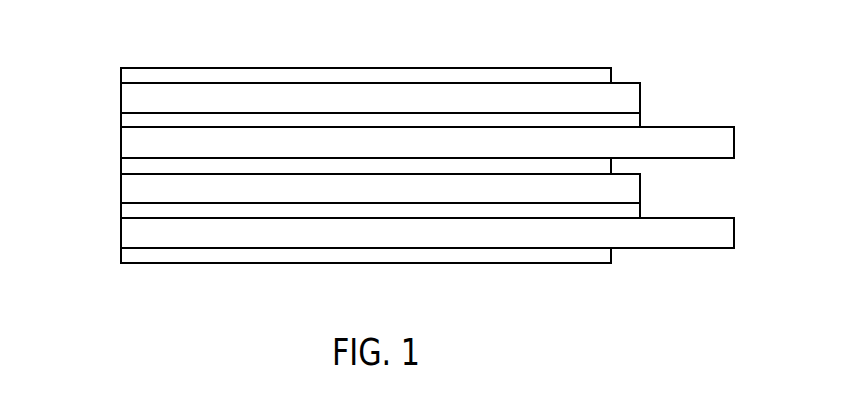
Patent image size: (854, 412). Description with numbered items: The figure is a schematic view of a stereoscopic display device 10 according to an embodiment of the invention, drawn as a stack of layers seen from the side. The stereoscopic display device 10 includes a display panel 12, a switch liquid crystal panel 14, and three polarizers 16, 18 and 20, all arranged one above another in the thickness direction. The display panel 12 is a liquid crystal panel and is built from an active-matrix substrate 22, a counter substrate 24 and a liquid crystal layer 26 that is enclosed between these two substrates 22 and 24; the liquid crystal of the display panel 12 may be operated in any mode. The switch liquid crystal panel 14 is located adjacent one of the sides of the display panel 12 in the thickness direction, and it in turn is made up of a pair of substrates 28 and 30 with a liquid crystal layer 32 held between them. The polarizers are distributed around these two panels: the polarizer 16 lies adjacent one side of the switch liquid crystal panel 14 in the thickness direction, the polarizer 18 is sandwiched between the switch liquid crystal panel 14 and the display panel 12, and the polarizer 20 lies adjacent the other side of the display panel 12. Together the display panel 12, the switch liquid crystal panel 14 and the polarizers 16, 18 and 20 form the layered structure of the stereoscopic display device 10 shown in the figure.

The stereoscopic display device 10 is at (642, 72).
The display panel 12 is at (72, 167).
The switch liquid crystal panel 14 is at (72, 77).
The polarizer 16 is at (446, 77).
The polarizer 18 is at (603, 166).
The polarizer 20 is at (468, 255).
The active-matrix substrate 22 is at (138, 233).
The counter substrate 24 is at (138, 184).
The liquid crystal layer 26 is at (138, 209).
The substrate 28 is at (137, 97).
The substrate 30 is at (137, 143).
The liquid crystal layer 32 is at (137, 120).